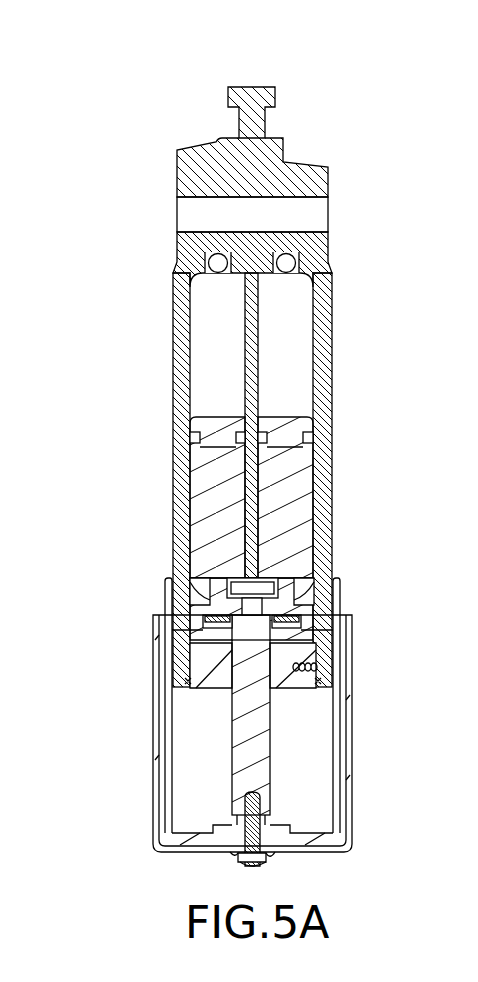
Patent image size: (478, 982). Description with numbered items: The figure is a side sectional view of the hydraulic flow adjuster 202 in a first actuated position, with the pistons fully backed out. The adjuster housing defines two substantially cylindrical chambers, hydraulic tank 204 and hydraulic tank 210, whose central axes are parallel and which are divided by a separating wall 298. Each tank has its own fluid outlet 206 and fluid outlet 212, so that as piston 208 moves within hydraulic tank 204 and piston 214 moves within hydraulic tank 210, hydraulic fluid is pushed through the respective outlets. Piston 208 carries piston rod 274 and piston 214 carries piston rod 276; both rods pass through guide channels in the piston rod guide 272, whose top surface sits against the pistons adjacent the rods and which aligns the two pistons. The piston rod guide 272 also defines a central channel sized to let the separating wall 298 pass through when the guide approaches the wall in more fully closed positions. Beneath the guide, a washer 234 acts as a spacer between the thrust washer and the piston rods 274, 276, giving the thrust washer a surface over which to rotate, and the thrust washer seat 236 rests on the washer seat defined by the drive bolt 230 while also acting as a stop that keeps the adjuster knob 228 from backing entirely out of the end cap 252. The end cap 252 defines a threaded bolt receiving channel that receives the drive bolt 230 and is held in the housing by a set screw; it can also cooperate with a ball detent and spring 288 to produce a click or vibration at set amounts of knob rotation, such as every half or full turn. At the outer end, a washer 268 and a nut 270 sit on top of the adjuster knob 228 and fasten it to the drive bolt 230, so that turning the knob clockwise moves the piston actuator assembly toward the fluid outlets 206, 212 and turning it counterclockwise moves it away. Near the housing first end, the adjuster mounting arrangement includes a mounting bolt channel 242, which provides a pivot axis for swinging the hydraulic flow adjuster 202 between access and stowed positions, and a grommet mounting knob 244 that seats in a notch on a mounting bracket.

The hydraulic flow adjuster 202 is at (322, 118).
The grommet mounting knob 244 is at (228, 88).
The mounting bolt channel 242 is at (160, 209).
The fluid outlet 212 is at (302, 249).
The fluid outlet 206 is at (203, 260).
The hydraulic tank 210 is at (307, 281).
The hydraulic tank 204 is at (186, 279).
The separating wall 298 is at (259, 323).
The piston 208 is at (208, 416).
The piston 214 is at (302, 416).
The piston rod guide 272 is at (300, 592).
The piston rod 274 is at (207, 598).
The piston rod 276 is at (318, 573).
The thrust washer seat 236 is at (197, 628).
The washer 234 is at (300, 617).
The end cap 252 is at (200, 676).
The ball detent and spring 288 is at (318, 668).
The drive bolt 230 is at (272, 744).
The washer 268 is at (230, 852).
The nut 270 is at (273, 861).
The adjuster knob 228 is at (355, 803).